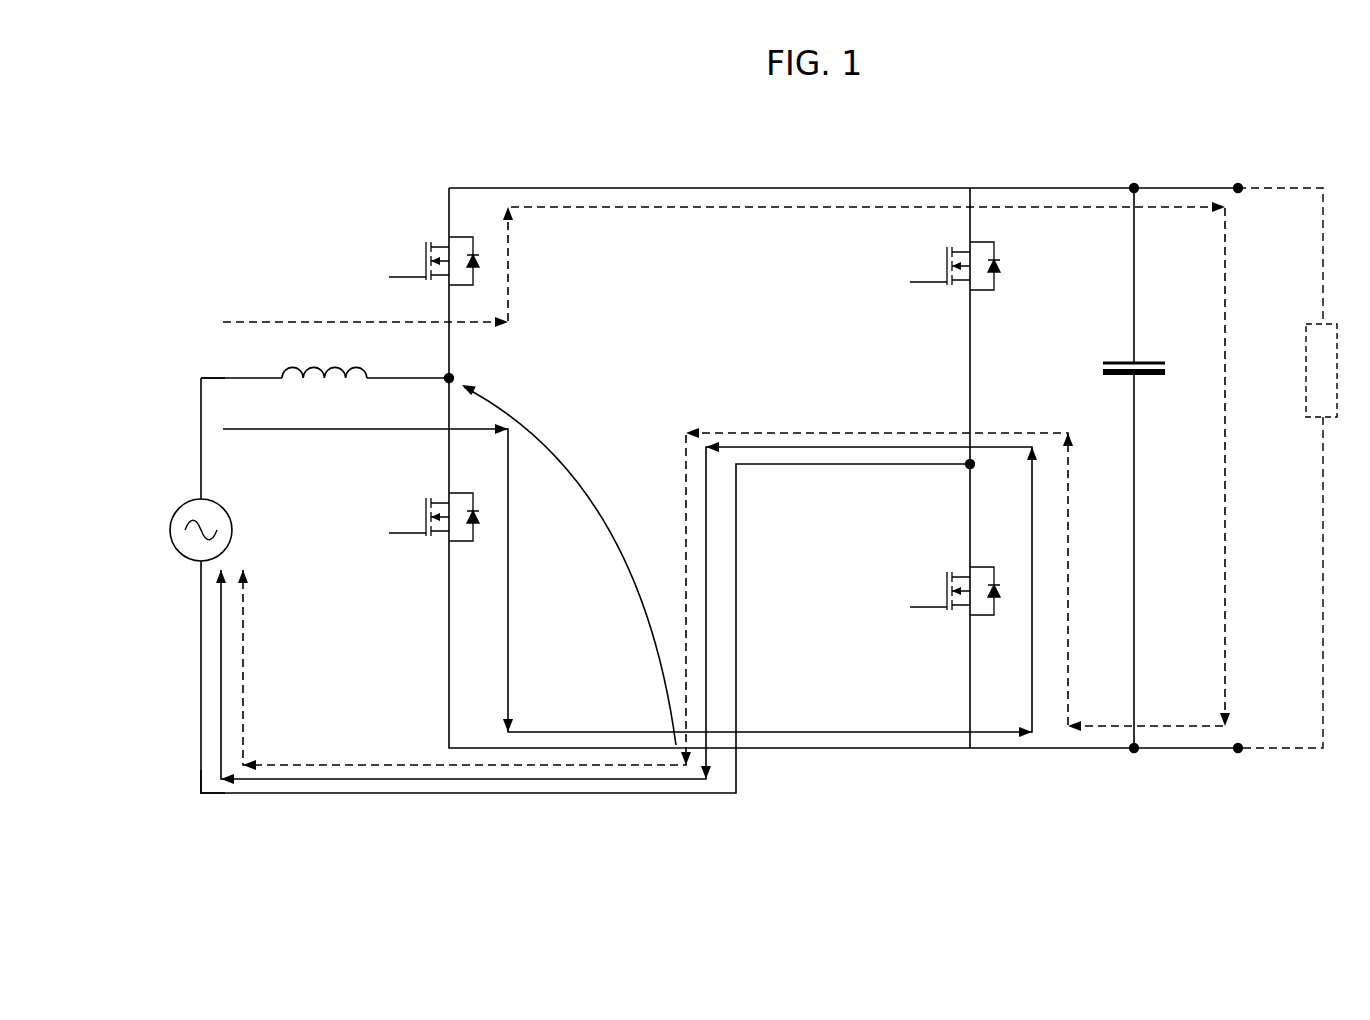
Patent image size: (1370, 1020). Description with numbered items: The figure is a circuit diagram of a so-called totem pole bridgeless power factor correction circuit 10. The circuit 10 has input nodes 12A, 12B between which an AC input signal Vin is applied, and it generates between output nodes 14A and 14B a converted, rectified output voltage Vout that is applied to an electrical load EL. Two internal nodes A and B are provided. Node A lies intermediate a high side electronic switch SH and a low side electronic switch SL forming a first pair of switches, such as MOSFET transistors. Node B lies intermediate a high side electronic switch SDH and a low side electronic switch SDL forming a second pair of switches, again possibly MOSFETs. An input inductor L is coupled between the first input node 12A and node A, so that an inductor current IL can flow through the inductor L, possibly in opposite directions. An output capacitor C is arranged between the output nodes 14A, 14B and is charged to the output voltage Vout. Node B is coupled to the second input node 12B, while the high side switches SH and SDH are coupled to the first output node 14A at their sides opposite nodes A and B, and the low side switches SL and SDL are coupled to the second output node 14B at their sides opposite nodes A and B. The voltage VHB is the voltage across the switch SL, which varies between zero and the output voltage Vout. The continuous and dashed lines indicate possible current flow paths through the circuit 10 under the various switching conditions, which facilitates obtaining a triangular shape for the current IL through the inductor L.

The totem pole bridgeless power factor correction circuit 10 is at (1063, 160).
The first input node 12A is at (203, 378).
The second input node 12B is at (210, 795).
The first output node 14A is at (1240, 186).
The second output node 14B is at (1240, 755).
The input inductor L is at (331, 363).
The node A is at (455, 376).
The node B is at (976, 464).
The output capacitor C is at (1112, 360).
The electrical load EL is at (1303, 396).
The high side electronic switch SH is at (437, 238).
The low side electronic switch SL is at (437, 546).
The high side electronic switch SDH is at (990, 251).
The low side electronic switch SDL is at (965, 613).
The AC input signal Vin is at (218, 531).
The output voltage Vout is at (1263, 276).
The voltage across the switch SL VHB is at (568, 563).
The inductor current IL is at (626, 604).